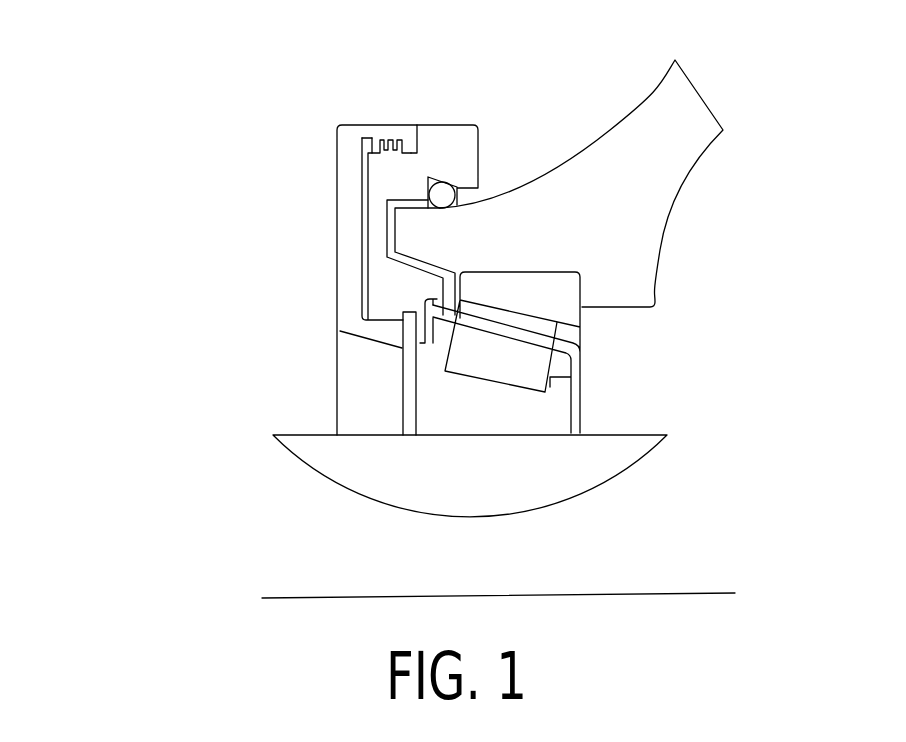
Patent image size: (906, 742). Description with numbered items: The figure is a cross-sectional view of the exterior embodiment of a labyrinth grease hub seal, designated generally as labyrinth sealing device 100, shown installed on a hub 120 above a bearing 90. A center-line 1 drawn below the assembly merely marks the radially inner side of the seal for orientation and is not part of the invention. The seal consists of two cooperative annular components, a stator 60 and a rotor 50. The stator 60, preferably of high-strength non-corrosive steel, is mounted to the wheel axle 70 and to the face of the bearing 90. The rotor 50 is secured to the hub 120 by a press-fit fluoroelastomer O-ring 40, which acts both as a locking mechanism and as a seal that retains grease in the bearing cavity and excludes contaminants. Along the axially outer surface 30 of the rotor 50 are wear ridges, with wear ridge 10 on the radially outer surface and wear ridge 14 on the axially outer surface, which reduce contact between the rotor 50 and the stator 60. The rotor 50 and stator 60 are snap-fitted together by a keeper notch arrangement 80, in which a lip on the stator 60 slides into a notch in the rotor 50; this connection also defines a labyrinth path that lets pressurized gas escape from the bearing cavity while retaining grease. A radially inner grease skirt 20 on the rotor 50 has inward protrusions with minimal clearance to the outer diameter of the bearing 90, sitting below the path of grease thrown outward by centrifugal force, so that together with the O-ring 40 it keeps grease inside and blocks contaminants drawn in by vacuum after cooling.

The labyrinth sealing device 100 is at (130, 163).
The wear ridge 10 is at (375, 138).
The rotor 50 is at (448, 138).
The O-ring 40 is at (457, 186).
The stator 60 is at (347, 175).
The wear ridge 14 is at (367, 220).
The axially outer surface 30 is at (367, 273).
The keeper notch arrangement 80 is at (400, 314).
The grease skirt 20 is at (418, 332).
The hub 120 is at (647, 213).
The wheel axle 70 is at (345, 465).
The bearing 90 is at (428, 397).
The center-line 1 is at (658, 595).